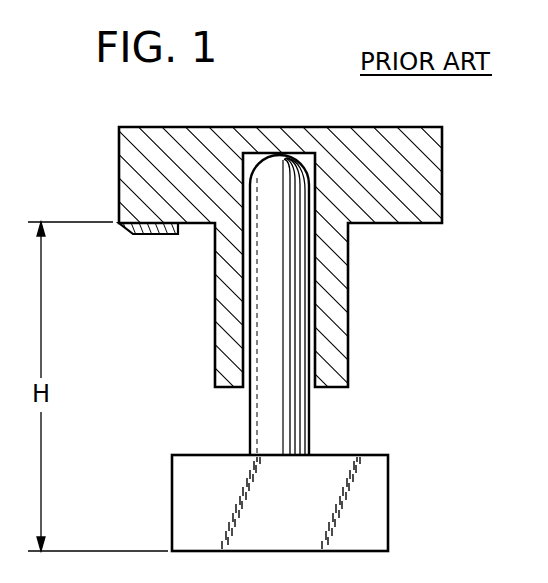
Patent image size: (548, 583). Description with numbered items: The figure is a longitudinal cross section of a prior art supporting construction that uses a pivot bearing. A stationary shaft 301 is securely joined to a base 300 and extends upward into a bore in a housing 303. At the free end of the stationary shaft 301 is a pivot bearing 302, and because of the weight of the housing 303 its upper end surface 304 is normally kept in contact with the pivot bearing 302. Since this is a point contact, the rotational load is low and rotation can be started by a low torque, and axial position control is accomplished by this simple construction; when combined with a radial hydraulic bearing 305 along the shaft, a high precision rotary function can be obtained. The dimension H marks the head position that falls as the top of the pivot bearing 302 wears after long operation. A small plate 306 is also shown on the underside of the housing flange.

The base 300 is at (367, 504).
The stationary shaft 301 is at (288, 421).
The pivot bearing 302 is at (268, 178).
The housing 303 is at (348, 331).
The upper end surface 304 is at (300, 152).
The radial hydraulic bearing 305 is at (309, 270).
The plate 306 is at (152, 234).